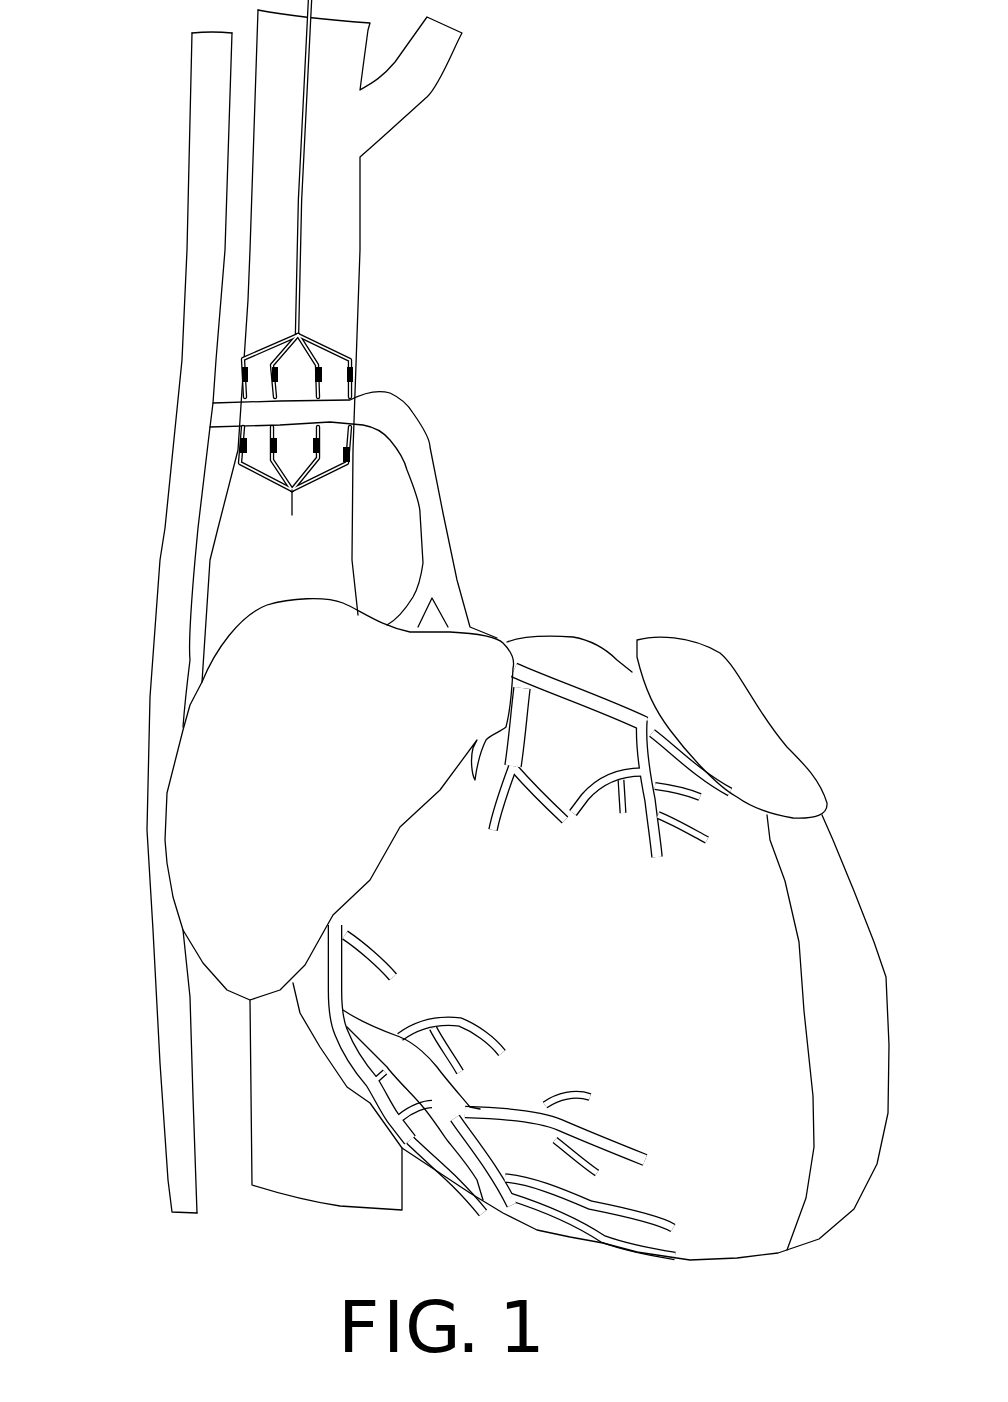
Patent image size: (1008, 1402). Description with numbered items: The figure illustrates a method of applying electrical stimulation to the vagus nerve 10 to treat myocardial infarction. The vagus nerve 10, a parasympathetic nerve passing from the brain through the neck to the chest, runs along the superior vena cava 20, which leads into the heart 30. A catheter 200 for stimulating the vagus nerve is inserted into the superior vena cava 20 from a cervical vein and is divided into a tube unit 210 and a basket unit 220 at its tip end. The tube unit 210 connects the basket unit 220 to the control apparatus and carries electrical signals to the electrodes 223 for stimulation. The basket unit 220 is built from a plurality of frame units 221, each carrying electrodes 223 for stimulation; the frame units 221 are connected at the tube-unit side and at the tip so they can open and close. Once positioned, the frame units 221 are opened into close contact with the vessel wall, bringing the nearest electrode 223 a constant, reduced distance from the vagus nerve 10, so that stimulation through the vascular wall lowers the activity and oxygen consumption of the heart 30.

The vagus nerve 10 is at (212, 192).
The superior vena cava 20 is at (338, 147).
The heart 30 is at (663, 610).
The catheter for stimulating the vagus nerve 200 is at (328, 257).
The tube unit 210 is at (302, 235).
The basket unit 220 is at (338, 345).
The frame unit 221 is at (352, 393).
The electrode for stimulation 223 is at (240, 374).